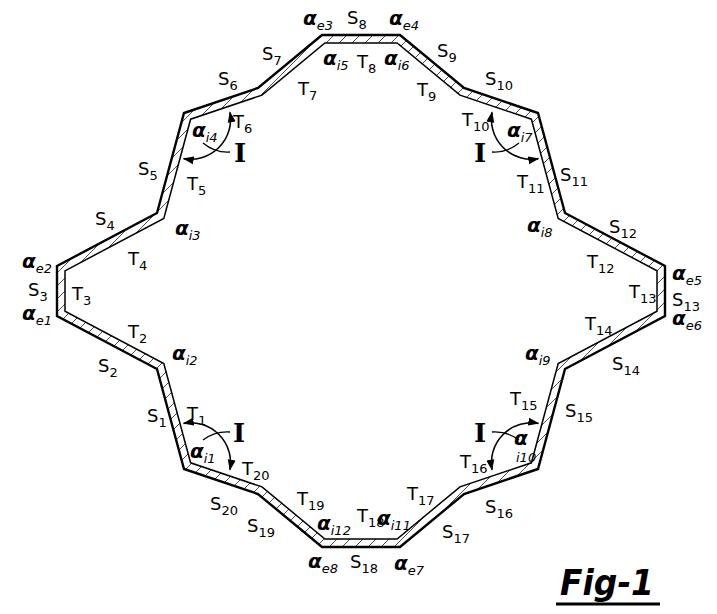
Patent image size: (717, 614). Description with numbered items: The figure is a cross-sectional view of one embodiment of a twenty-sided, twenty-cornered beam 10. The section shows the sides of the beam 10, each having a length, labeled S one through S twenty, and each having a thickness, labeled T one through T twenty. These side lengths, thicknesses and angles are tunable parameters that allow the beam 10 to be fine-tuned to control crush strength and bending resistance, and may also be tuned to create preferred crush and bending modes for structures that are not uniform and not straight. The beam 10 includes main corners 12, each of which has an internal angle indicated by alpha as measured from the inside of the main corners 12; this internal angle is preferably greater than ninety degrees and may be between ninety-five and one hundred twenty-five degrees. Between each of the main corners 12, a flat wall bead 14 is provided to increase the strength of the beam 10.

The beam 10 is at (112, 182).
The main corners 12 is at (184, 113).
The flat wall bead 14 is at (88, 335).